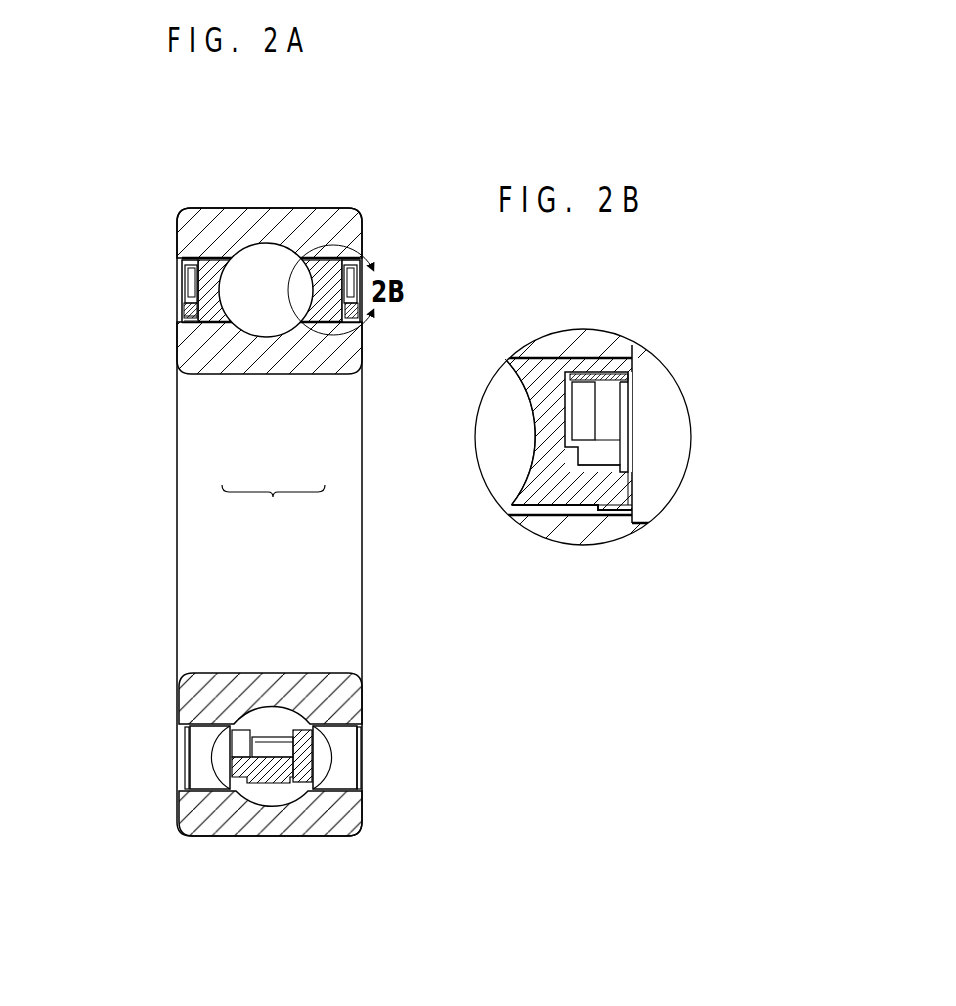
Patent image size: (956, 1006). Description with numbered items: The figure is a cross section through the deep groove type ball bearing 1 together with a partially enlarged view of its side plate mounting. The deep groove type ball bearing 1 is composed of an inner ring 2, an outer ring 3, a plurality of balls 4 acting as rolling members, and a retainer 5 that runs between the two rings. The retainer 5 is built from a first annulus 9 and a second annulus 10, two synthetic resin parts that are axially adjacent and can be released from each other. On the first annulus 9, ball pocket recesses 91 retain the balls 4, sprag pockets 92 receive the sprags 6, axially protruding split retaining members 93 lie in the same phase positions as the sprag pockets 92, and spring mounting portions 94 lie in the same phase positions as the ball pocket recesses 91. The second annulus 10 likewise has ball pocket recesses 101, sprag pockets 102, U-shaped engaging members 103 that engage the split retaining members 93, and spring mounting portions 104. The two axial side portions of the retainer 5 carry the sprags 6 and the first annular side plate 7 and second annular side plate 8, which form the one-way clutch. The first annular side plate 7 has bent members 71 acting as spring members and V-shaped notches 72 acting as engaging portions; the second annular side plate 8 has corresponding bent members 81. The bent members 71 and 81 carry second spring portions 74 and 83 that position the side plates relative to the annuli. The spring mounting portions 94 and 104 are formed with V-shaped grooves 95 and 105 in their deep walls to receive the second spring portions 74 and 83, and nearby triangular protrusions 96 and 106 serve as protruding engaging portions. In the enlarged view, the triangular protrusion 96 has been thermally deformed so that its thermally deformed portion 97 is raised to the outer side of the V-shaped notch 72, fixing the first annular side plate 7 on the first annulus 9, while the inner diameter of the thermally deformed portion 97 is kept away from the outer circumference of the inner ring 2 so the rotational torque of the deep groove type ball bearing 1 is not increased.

In FIG. 2A, the deep groove type ball bearing 1 is at (378, 185).
In FIG. 2A, the inner ring 2 is at (215, 374).
In FIG. 2A, the outer ring 3 is at (197, 212).
In FIG. 2A, the balls 4 is at (276, 331).
In FIG. 2A, the retainer 5 is at (284, 537).
In FIG. 2A, the sprags 6 is at (211, 784).
In FIG. 2A, the first annular side plate 7 is at (363, 753).
In FIG. 2B, the first annular side plate 7 is at (621, 412).
In FIG. 2A, the second annular side plate 8 is at (196, 291).
In FIG. 2A, the first annulus 9 is at (330, 316).
In FIG. 2B, the first annulus 9 is at (564, 500).
In FIG. 2A, the second annulus 10 is at (214, 345).
In FIG. 2B, the bent member 71 is at (588, 376).
In FIG. 2B, the V-shaped notch 72 is at (632, 489).
In FIG. 2B, the second spring portion 74 is at (640, 380).
In FIG. 2A, the bent member 81 is at (186, 251).
In FIG. 2A, the second spring portion 83 is at (182, 307).
In FIG. 2B, the ball pocket recess 91 is at (530, 463).
In FIG. 2A, the sprag pocket 92 is at (325, 765).
In FIG. 2A, the split retaining member 93 is at (273, 745).
In FIG. 2B, the spring mounting portion 94 is at (601, 452).
In FIG. 2B, the V-shaped groove 95 is at (572, 372).
In FIG. 2B, the triangular protrusion 96 is at (630, 503).
In FIG. 2B, the thermally deformed portion 97 is at (630, 472).
In FIG. 2A, the ball pocket recess 101 is at (241, 252).
In FIG. 2A, the sprag pocket 102 is at (211, 780).
In FIG. 2A, the U-shaped engaging member 103 is at (275, 786).
In FIG. 2A, the spring mounting portion 104 is at (184, 317).
In FIG. 2A, the V-shaped groove 105 is at (202, 281).
In FIG. 2A, the triangular protrusion 106 is at (185, 323).